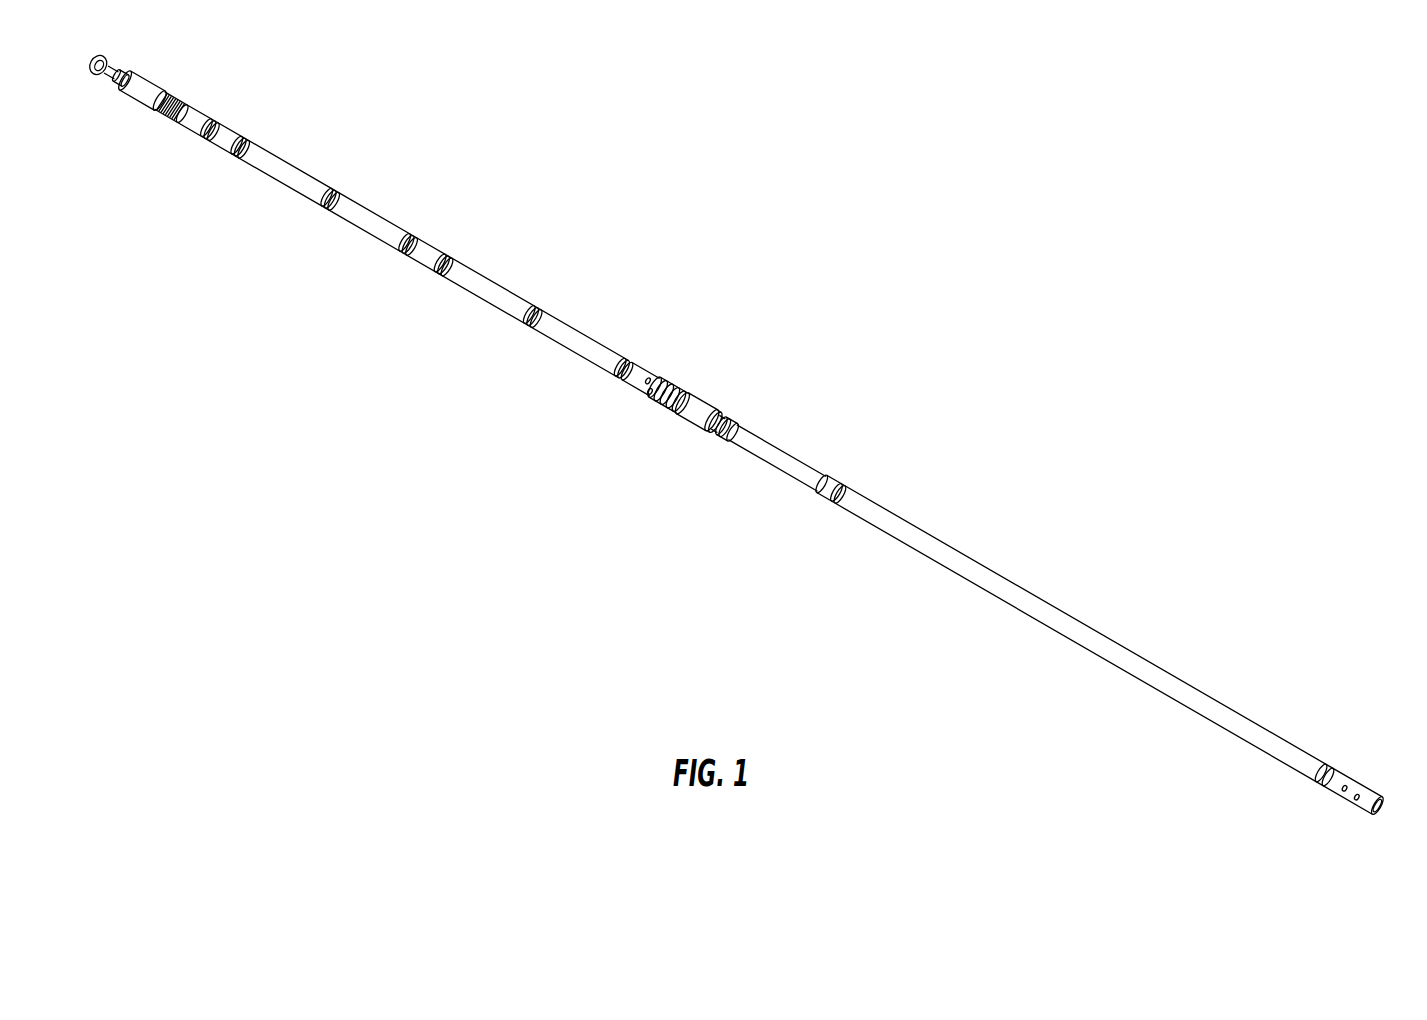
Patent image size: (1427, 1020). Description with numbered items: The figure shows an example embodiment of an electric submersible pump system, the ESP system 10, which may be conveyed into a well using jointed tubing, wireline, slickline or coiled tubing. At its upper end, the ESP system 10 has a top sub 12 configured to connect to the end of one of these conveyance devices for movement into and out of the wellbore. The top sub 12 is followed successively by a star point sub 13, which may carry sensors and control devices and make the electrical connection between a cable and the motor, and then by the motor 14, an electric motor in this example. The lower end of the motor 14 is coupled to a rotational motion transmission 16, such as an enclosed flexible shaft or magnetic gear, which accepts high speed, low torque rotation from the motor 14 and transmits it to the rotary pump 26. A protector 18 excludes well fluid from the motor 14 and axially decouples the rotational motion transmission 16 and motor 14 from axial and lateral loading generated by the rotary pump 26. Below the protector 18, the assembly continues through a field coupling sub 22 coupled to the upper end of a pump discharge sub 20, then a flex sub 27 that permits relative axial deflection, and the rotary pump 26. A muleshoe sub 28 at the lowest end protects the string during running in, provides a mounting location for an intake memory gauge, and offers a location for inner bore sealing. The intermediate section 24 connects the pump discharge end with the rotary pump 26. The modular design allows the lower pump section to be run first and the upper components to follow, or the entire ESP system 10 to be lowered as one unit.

The ESP system 10 is at (437, 196).
The top sub 12 is at (108, 88).
The star point sub 13 is at (179, 102).
The motor 14 is at (295, 166).
The rotational motion transmission 16 is at (363, 231).
The protector 18 is at (563, 335).
The pump discharge sub 20 is at (640, 392).
The field coupling sub 22 is at (703, 400).
The extension rod segment 24 is at (782, 450).
The rotary pump 26 is at (1040, 623).
The flex sub 27 is at (748, 453).
The muleshoe sub 28 is at (1353, 780).